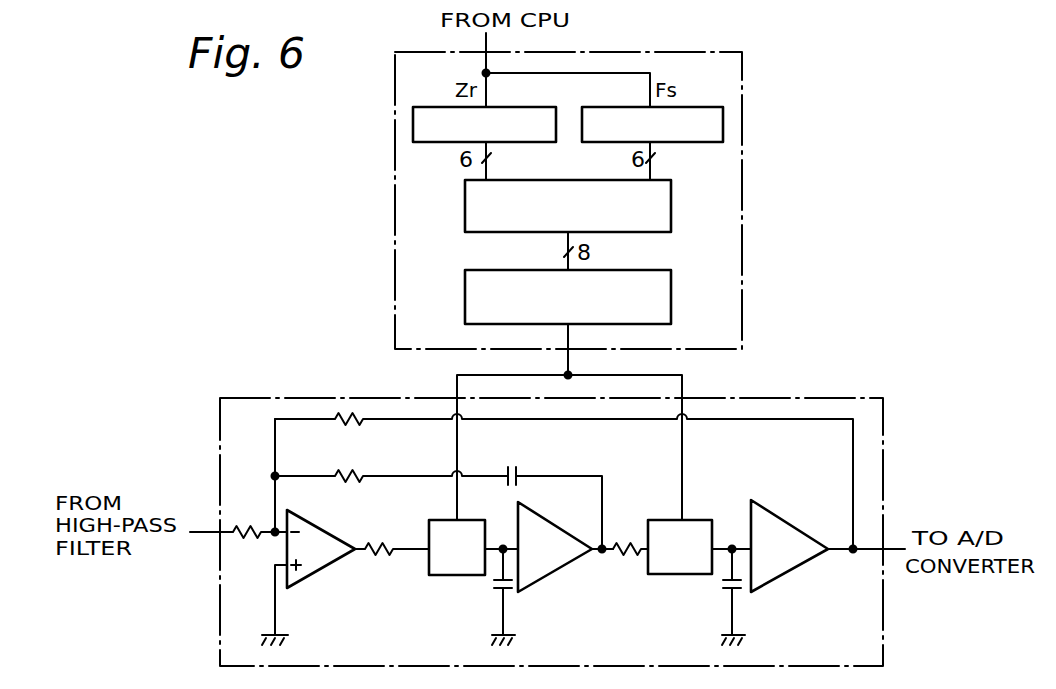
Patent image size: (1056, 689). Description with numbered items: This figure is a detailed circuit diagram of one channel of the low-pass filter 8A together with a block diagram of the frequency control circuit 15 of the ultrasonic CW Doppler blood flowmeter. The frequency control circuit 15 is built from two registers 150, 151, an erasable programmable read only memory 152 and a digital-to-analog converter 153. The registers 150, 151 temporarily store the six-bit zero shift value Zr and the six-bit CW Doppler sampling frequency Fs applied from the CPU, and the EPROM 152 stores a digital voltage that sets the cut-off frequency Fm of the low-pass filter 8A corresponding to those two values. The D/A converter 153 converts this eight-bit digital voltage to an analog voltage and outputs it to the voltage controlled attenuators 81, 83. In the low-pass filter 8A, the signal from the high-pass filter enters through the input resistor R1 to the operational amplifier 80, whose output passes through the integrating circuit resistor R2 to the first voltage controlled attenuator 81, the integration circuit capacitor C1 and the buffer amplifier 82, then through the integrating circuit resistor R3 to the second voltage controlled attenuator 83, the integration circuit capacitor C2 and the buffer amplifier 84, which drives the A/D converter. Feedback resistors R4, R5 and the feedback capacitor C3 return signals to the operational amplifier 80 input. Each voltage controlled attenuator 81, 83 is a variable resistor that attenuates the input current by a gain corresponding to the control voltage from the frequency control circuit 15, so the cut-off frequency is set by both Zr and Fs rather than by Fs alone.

The frequency control circuit 15 is at (742, 73).
The register 150 is at (438, 142).
The register 151 is at (670, 142).
The erasable programmable read only memory 152 is at (671, 207).
The digital-to-analog converter 153 is at (671, 292).
The low-pass filter 8A is at (883, 412).
The operational amplifier 80 is at (320, 574).
The voltage controlled attenuator 81 is at (455, 575).
The buffer amplifier 82 is at (558, 570).
The voltage controlled attenuator 83 is at (672, 574).
The buffer amplifier 84 is at (787, 573).
The input resistor R1 is at (245, 526).
The integrating circuit resistor R2 is at (378, 544).
The integrating circuit resistor R3 is at (616, 540).
The feedback resistor R4 is at (345, 482).
The feedback resistor R5 is at (345, 425).
The integration circuit capacitor C1 is at (492, 584).
The integration circuit capacitor C2 is at (722, 584).
The feedback capacitor C3 is at (512, 465).